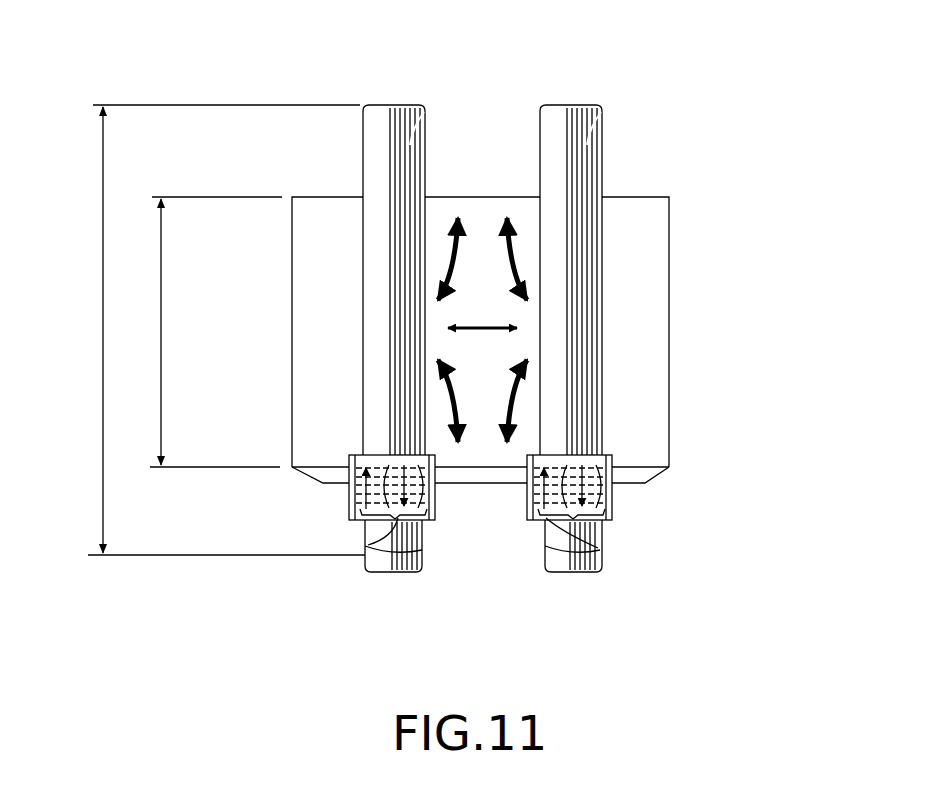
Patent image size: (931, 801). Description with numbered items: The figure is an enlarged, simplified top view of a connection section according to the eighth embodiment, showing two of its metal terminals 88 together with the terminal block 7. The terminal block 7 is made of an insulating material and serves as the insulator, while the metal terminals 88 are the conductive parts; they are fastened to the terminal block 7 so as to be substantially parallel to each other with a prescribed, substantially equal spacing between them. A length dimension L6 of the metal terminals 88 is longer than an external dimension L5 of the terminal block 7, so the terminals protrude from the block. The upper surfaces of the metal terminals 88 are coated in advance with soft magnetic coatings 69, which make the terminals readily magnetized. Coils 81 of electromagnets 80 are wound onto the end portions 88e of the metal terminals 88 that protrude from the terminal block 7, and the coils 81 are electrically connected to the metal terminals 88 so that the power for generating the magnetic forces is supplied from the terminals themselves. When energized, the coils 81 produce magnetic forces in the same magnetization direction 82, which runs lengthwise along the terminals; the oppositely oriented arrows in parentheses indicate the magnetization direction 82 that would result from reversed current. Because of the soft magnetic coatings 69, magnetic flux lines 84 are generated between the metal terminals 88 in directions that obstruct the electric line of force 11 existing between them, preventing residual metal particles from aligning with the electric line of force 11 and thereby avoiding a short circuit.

The terminal block 7 is at (638, 205).
The electric line of force 11 is at (481, 326).
The soft magnetic coating 69 is at (410, 145).
The electromagnet 80 is at (345, 451).
The coil 81 is at (347, 487).
The magnetization direction 82 is at (368, 545).
The magnetic flux lines 84 is at (455, 262).
The metal terminal 88 is at (497, 328).
The end portion 88e is at (403, 576).
The external dimension L5 is at (216, 332).
The length dimension L6 is at (217, 330).